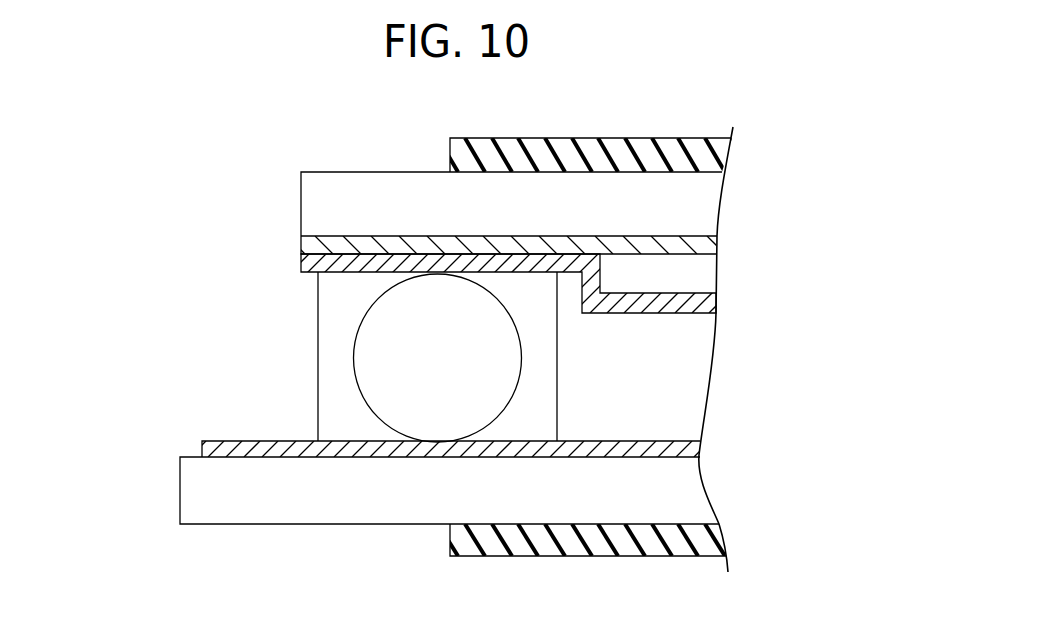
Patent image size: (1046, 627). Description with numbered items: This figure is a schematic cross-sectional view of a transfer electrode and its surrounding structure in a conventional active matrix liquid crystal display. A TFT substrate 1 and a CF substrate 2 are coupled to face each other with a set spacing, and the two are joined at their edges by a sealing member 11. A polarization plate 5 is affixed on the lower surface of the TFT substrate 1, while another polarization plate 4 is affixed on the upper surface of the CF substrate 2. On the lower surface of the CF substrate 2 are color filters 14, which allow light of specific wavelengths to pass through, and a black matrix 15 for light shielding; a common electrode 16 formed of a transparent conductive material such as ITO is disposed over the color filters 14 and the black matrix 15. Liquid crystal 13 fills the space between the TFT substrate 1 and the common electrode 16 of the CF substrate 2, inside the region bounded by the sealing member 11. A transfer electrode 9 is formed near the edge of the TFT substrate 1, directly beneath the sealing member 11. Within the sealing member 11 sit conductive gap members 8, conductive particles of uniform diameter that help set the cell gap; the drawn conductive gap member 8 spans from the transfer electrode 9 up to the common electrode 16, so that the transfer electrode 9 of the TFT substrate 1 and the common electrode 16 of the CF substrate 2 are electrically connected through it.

The TFT substrate 1 is at (223, 517).
The CF substrate 2 is at (345, 172).
The polarization plate 4 is at (587, 137).
The polarization plate 5 is at (597, 545).
The conductive gap member 8 is at (392, 353).
The transfer electrode 9 is at (275, 437).
The sealing member 11 is at (537, 413).
The liquid crystal 13 is at (697, 350).
The color filter 14 is at (702, 275).
The black matrix 15 is at (300, 245).
The common electrode 16 is at (300, 263).